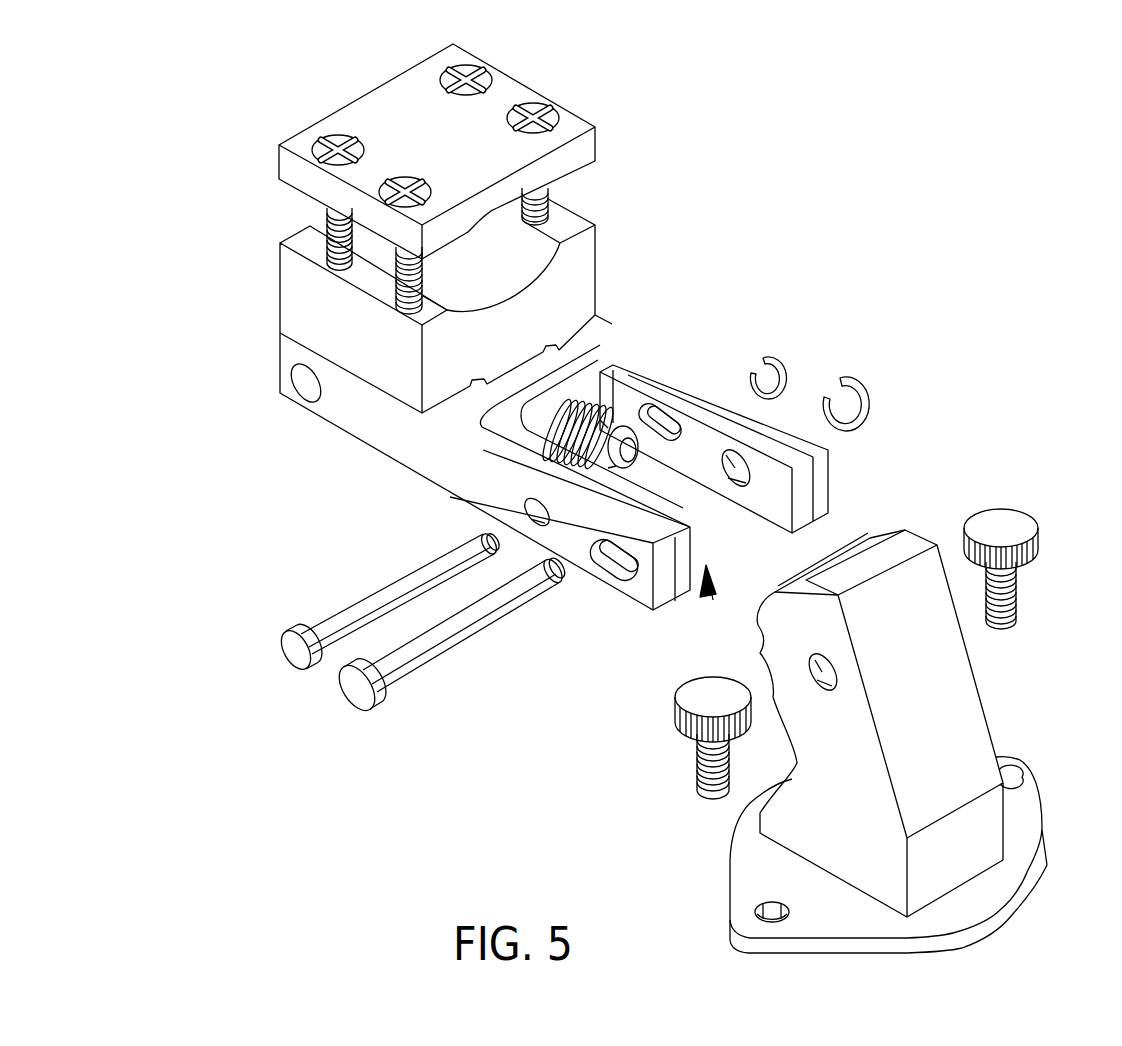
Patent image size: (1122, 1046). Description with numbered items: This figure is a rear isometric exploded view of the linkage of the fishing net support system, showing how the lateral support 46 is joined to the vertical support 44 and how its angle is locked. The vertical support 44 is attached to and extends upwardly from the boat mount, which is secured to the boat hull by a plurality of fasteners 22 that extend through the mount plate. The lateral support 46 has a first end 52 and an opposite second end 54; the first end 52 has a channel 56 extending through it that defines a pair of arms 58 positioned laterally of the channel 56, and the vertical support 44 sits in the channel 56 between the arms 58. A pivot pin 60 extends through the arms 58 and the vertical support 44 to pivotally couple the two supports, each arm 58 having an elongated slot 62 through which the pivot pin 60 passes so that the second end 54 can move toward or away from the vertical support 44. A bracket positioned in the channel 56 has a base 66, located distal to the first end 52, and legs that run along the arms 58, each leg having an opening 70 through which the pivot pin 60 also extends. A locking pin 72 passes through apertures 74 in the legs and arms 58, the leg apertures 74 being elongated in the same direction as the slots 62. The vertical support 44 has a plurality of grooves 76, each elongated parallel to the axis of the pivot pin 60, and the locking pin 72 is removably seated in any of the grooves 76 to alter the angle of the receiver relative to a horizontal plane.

The fasteners 22 is at (1017, 598).
The vertical support 44 is at (953, 700).
The lateral support 46 is at (348, 408).
The first end 52 is at (833, 490).
The second end 54 is at (280, 355).
The channel 56 is at (713, 600).
The arms 58 is at (785, 428).
The pivot pin 60 is at (406, 671).
The slot 62 is at (600, 560).
The base 66 is at (510, 413).
The opening 70 is at (724, 455).
The locking pin 72 is at (328, 626).
The apertures 74 is at (642, 410).
The grooves 76 is at (876, 558).